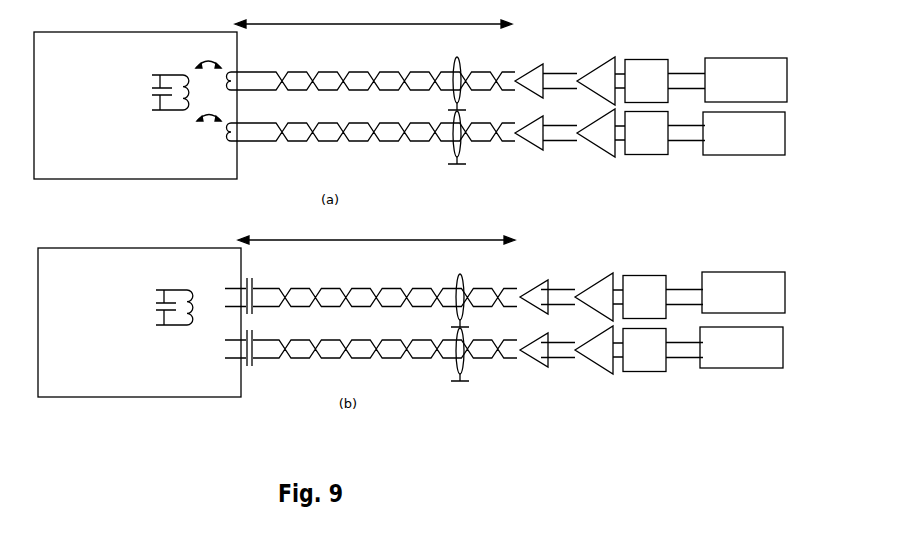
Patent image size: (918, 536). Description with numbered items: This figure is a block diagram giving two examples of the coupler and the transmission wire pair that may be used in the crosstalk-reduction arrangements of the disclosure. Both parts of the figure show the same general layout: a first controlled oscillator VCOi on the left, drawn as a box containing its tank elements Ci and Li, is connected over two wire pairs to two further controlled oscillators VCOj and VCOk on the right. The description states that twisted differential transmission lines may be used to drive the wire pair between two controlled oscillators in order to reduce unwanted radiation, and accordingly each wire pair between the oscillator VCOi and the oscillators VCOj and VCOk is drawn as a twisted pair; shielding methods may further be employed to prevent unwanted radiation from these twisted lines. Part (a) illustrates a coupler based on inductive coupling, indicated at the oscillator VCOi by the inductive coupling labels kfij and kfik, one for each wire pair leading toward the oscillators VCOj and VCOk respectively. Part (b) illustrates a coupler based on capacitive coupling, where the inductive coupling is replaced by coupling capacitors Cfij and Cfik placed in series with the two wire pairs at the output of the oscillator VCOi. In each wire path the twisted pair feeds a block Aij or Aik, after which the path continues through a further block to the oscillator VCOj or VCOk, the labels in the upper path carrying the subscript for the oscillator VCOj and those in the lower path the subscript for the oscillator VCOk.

The voltage controlled oscillator i VCOi is at (137, 214).
The voltage controlled oscillator j VCOj is at (744, 185).
The voltage controlled oscillator k VCOk is at (742, 240).
The tank capacitor of VCO i Ci is at (169, 211).
The tank inductor of VCO i Li is at (183, 211).
The magnetic coupling factor between VCO i and j kfij is at (216, 65).
The magnetic coupling factor between VCO i and k kfik is at (217, 118).
The coupling capacitor between VCO i and j Cfij is at (228, 284).
The coupling capacitor between VCO i and k Cfik is at (229, 339).
The amplifier between VCO i and j Aij is at (595, 189).
The amplifier between VCO i and k Aik is at (595, 241).